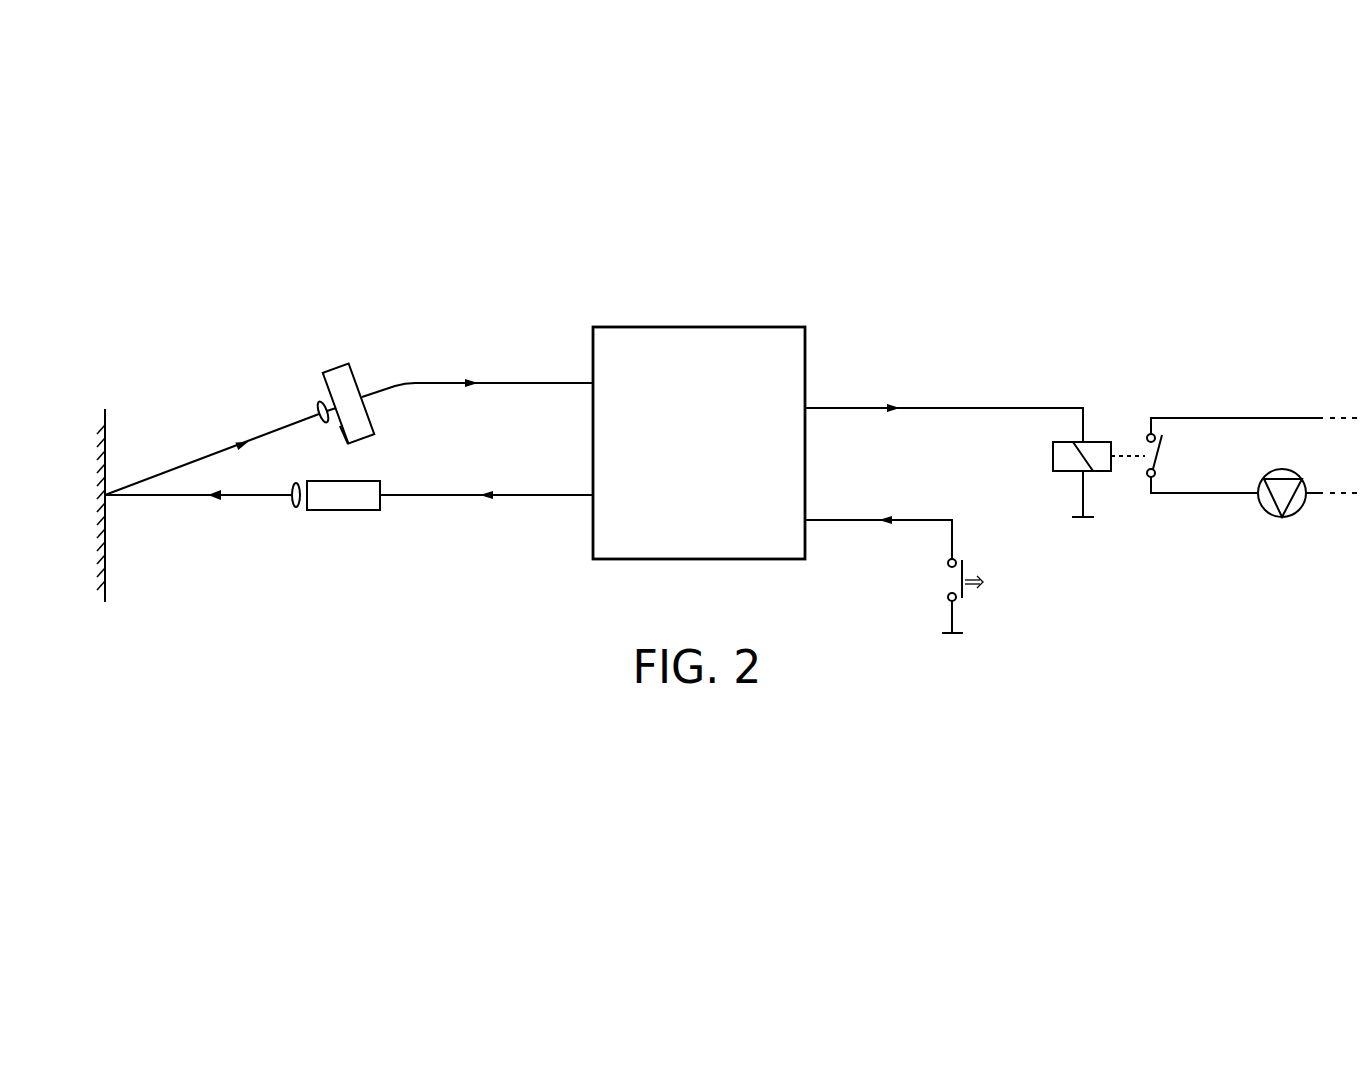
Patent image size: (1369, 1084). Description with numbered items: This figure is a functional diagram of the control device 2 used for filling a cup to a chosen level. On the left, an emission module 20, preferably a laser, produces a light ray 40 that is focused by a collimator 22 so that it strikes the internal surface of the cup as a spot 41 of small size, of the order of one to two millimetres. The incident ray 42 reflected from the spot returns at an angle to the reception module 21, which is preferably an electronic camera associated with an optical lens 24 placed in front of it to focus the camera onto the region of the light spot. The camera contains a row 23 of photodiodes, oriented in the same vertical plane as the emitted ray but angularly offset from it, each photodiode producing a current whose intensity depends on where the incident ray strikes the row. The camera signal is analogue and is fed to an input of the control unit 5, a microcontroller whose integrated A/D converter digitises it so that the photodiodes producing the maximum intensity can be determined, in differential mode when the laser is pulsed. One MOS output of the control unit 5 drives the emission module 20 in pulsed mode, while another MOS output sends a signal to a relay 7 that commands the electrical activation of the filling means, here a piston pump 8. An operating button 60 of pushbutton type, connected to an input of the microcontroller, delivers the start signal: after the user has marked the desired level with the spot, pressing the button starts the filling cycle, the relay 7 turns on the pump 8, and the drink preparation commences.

The control device 2 is at (514, 601).
The control unit 5 is at (697, 566).
The relay 7 is at (1043, 453).
The piston pump 8 is at (1281, 530).
The emission module 20 is at (357, 511).
The reception module 21 is at (362, 366).
The collimator 22 is at (296, 507).
The row of photodiodes 23 is at (338, 430).
The optical lens 24 is at (318, 407).
The light ray 40 is at (185, 498).
The spot 41 is at (105, 496).
The incident ray 42 is at (194, 460).
The operating button 60 is at (941, 579).